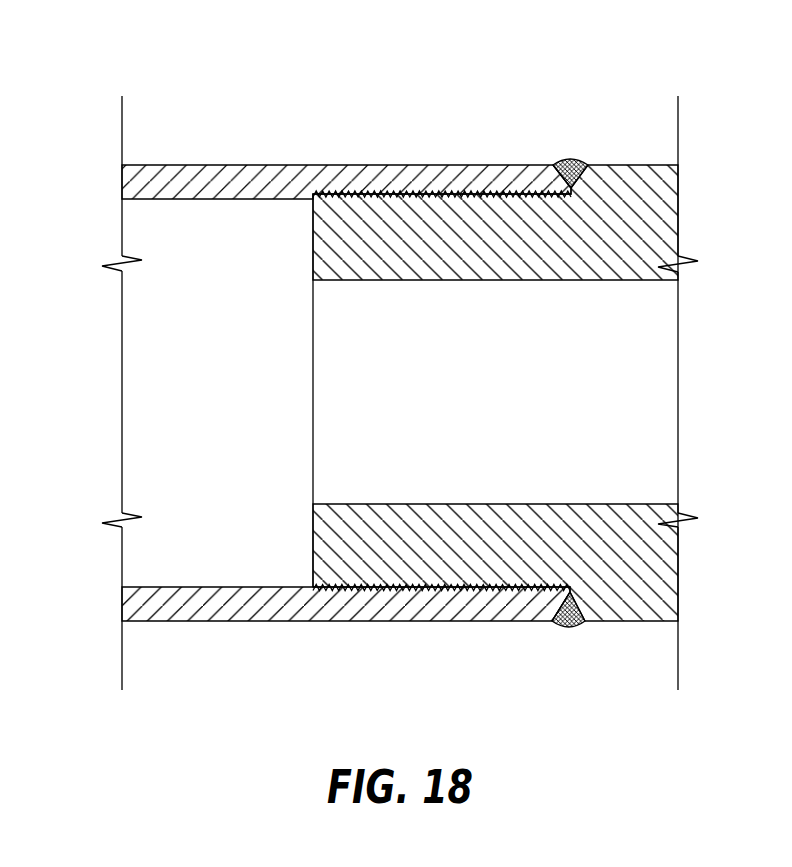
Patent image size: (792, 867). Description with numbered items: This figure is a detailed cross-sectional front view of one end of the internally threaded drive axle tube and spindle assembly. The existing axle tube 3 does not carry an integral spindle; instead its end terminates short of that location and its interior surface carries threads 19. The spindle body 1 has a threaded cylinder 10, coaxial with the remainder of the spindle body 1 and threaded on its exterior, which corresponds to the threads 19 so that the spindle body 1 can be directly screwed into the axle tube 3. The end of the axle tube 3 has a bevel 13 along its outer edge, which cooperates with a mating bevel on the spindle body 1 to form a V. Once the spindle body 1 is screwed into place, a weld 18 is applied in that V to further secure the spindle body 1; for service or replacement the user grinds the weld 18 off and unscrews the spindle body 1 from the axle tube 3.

The spindle body 1 is at (654, 203).
The axle tube 3 is at (205, 163).
The threaded cylinder 10 is at (313, 242).
The bevel 13 is at (549, 180).
The weld 18 is at (572, 160).
The threads 19 is at (405, 191).